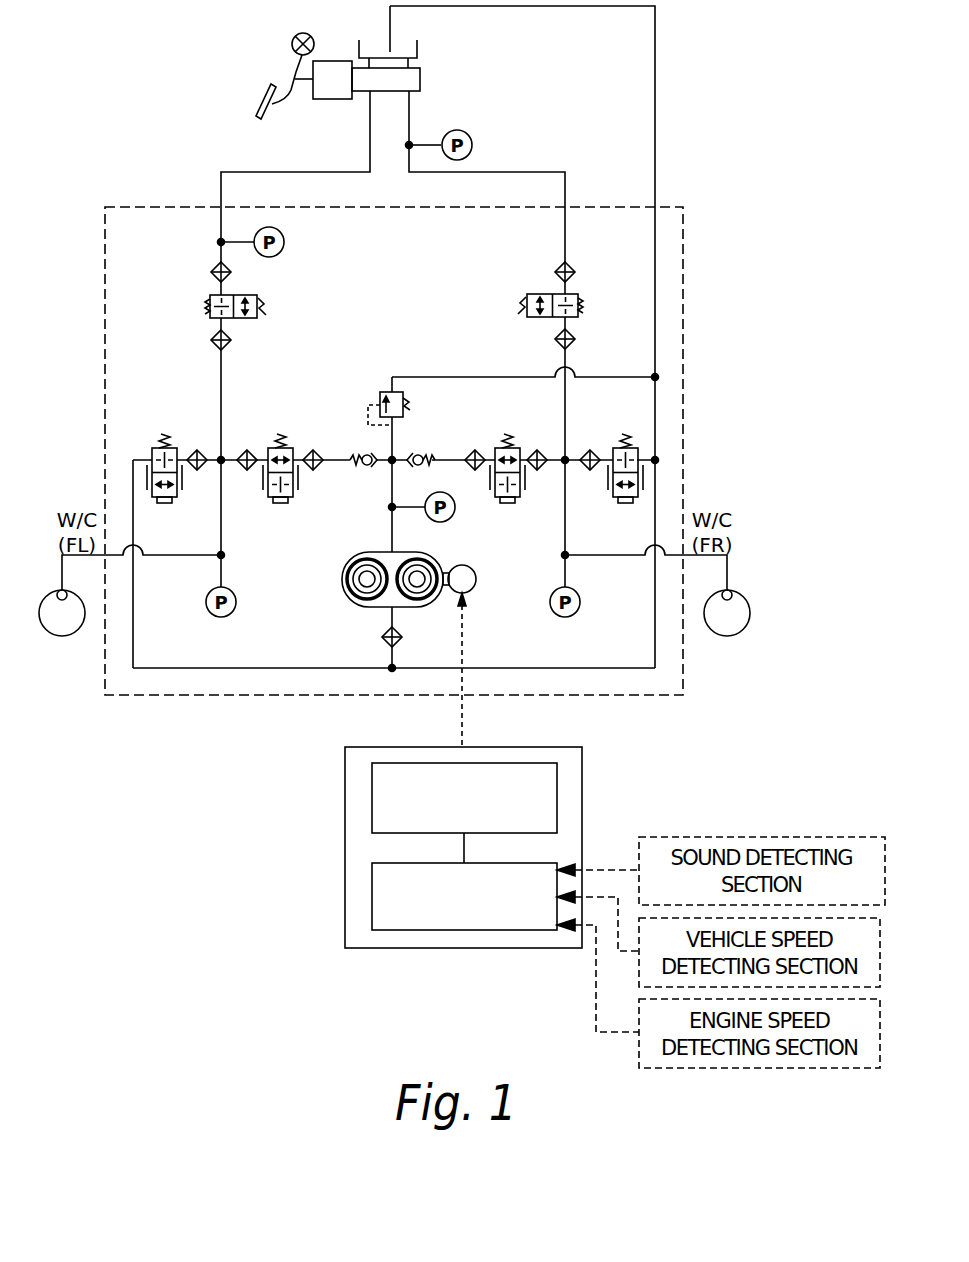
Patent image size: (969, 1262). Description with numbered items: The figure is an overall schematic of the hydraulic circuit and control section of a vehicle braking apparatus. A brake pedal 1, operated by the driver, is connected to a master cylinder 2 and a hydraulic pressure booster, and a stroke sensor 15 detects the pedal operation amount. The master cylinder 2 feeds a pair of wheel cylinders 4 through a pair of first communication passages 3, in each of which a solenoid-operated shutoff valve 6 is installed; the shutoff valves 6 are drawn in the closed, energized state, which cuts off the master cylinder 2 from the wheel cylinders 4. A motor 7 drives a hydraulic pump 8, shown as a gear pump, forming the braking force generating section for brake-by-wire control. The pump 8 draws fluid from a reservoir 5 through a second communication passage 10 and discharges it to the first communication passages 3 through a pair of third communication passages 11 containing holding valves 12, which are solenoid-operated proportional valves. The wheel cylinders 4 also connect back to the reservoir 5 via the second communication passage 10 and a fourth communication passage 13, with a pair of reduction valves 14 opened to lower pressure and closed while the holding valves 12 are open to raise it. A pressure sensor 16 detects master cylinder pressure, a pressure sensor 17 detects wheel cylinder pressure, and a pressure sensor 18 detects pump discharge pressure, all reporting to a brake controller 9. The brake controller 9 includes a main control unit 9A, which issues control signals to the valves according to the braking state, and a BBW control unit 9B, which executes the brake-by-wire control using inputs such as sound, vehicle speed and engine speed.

The brake pedal 1 is at (268, 90).
The master cylinder 2 is at (421, 78).
The first communication passages 3 is at (240, 172).
The wheel cylinders 4 is at (62, 636).
The reservoir 5 is at (420, 42).
The solenoid-operated shutoff valves 6 is at (258, 300).
The motor 7 is at (477, 579).
The hydraulic pump 8 is at (360, 553).
The brake controller 9 is at (496, 830).
The main control unit 9A is at (557, 763).
The BBW control unit 9B is at (557, 863).
The second communication passage 10 is at (521, 668).
The third communication passages 11 is at (340, 458).
The holding valves 12 is at (280, 503).
The fourth communication passage 13 is at (258, 668).
The reduction valves 14 is at (165, 503).
The stroke sensor 15 is at (291, 40).
The pressure sensor 16 is at (474, 145).
The pressure sensor 17 is at (237, 602).
The pressure sensor 18 is at (450, 516).